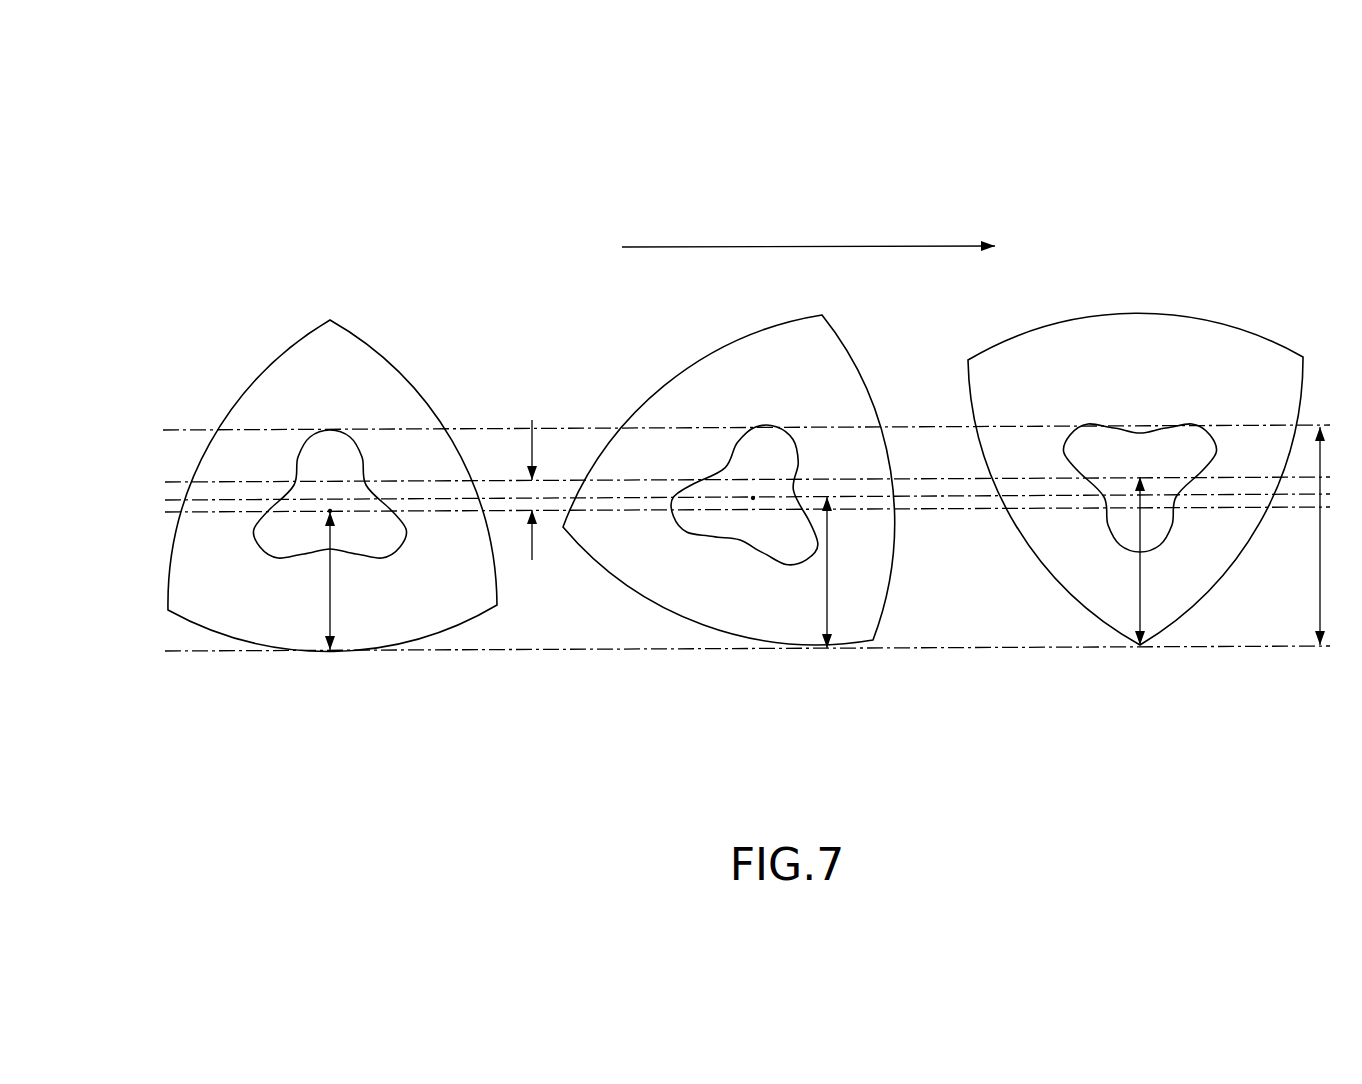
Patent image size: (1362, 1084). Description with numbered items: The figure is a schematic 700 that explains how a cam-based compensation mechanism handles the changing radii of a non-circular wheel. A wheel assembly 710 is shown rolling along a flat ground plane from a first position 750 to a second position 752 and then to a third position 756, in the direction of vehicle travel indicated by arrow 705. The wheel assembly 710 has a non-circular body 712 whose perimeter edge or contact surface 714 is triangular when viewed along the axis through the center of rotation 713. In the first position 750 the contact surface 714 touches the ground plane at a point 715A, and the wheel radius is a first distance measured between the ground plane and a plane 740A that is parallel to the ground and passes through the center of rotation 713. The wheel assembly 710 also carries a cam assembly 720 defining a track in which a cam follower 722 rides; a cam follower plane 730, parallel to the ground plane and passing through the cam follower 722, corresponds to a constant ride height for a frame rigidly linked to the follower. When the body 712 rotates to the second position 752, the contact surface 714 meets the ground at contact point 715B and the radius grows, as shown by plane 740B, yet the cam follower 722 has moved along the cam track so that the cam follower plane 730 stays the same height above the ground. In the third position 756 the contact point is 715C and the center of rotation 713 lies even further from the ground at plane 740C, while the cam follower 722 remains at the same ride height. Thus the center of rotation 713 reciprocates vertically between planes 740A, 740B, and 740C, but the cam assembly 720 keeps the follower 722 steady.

The schematic 700 is at (1068, 200).
The direction of vehicle travel 705 is at (784, 250).
The wheel assembly 710 is at (470, 648).
The non-circular body 712 is at (221, 606).
The center of rotation 713 is at (328, 512).
The contact surface 714 is at (432, 640).
The contact point 715A is at (330, 651).
The contact point 715B is at (827, 646).
The contact point 715C is at (1140, 648).
The cam assembly 720 is at (245, 538).
The cam follower 722 is at (330, 430).
The cam follower plane 730 is at (258, 427).
The plane 740A is at (463, 512).
The plane 740B is at (615, 500).
The plane 740C is at (1000, 478).
The first position 750 is at (337, 700).
The second position 752 is at (818, 698).
The third position 756 is at (1143, 697).